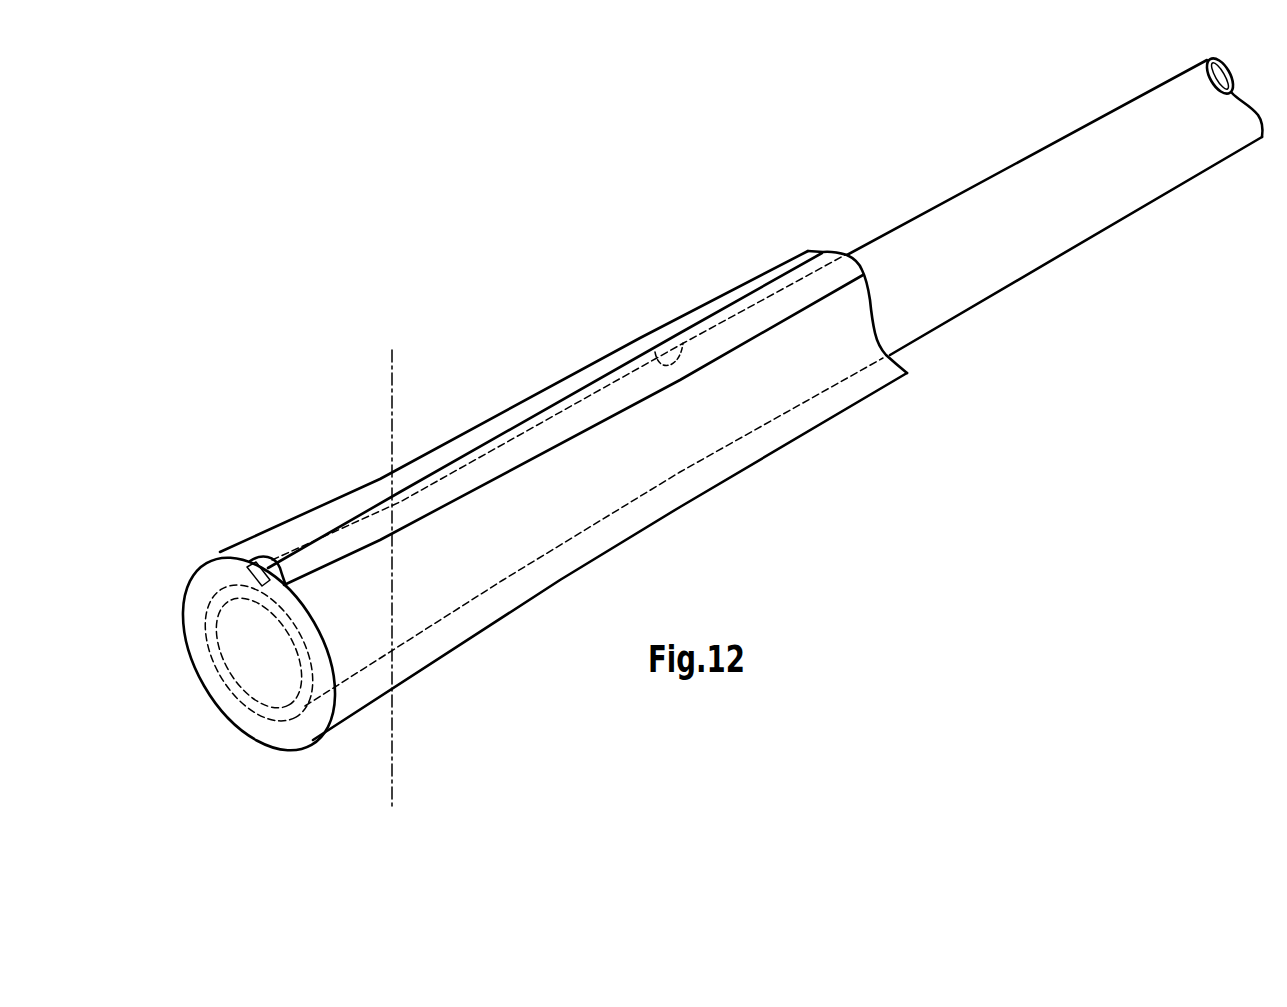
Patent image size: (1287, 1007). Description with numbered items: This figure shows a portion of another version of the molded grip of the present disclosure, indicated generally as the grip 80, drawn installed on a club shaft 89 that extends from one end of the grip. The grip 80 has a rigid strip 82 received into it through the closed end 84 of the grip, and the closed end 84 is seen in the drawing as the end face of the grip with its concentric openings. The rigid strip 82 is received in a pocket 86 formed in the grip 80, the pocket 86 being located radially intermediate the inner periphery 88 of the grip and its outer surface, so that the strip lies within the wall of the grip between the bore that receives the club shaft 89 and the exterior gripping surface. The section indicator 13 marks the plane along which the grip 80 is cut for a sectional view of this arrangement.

The grip 80 is at (713, 528).
The rigid strip 82 is at (217, 565).
The closed end 84 is at (256, 668).
The pocket 86 is at (267, 577).
The inner periphery 88 is at (656, 354).
The club shaft 89 is at (1007, 167).
The section line 13 is at (392, 350).